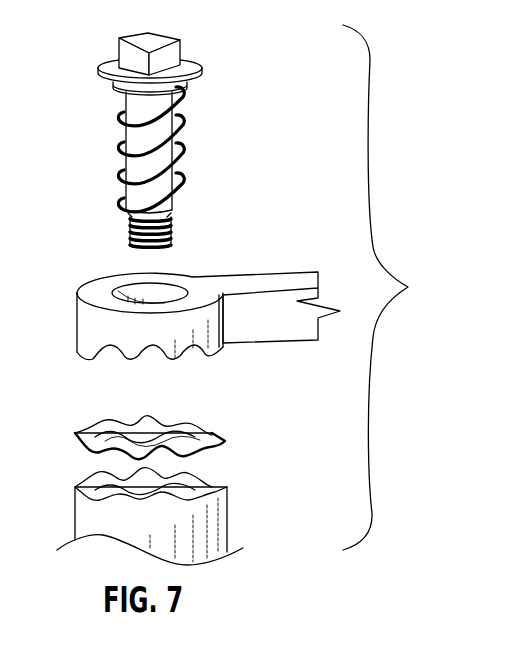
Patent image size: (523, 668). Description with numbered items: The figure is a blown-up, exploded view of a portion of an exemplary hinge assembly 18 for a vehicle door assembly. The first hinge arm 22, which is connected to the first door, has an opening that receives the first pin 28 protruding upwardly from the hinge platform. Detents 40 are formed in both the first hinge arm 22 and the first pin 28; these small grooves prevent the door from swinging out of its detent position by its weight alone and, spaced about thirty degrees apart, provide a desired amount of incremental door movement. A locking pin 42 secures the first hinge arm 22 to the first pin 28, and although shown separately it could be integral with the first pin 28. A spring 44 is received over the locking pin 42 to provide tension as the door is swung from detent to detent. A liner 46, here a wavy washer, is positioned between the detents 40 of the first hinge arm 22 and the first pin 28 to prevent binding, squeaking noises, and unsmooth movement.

The hinge assembly 18 is at (391, 287).
The first hinge arm 22 is at (263, 306).
The first pin 28 is at (213, 512).
The detents 40 is at (106, 360).
The locking pin 42 is at (181, 48).
The spring 44 is at (173, 123).
The liner 46 is at (212, 437).